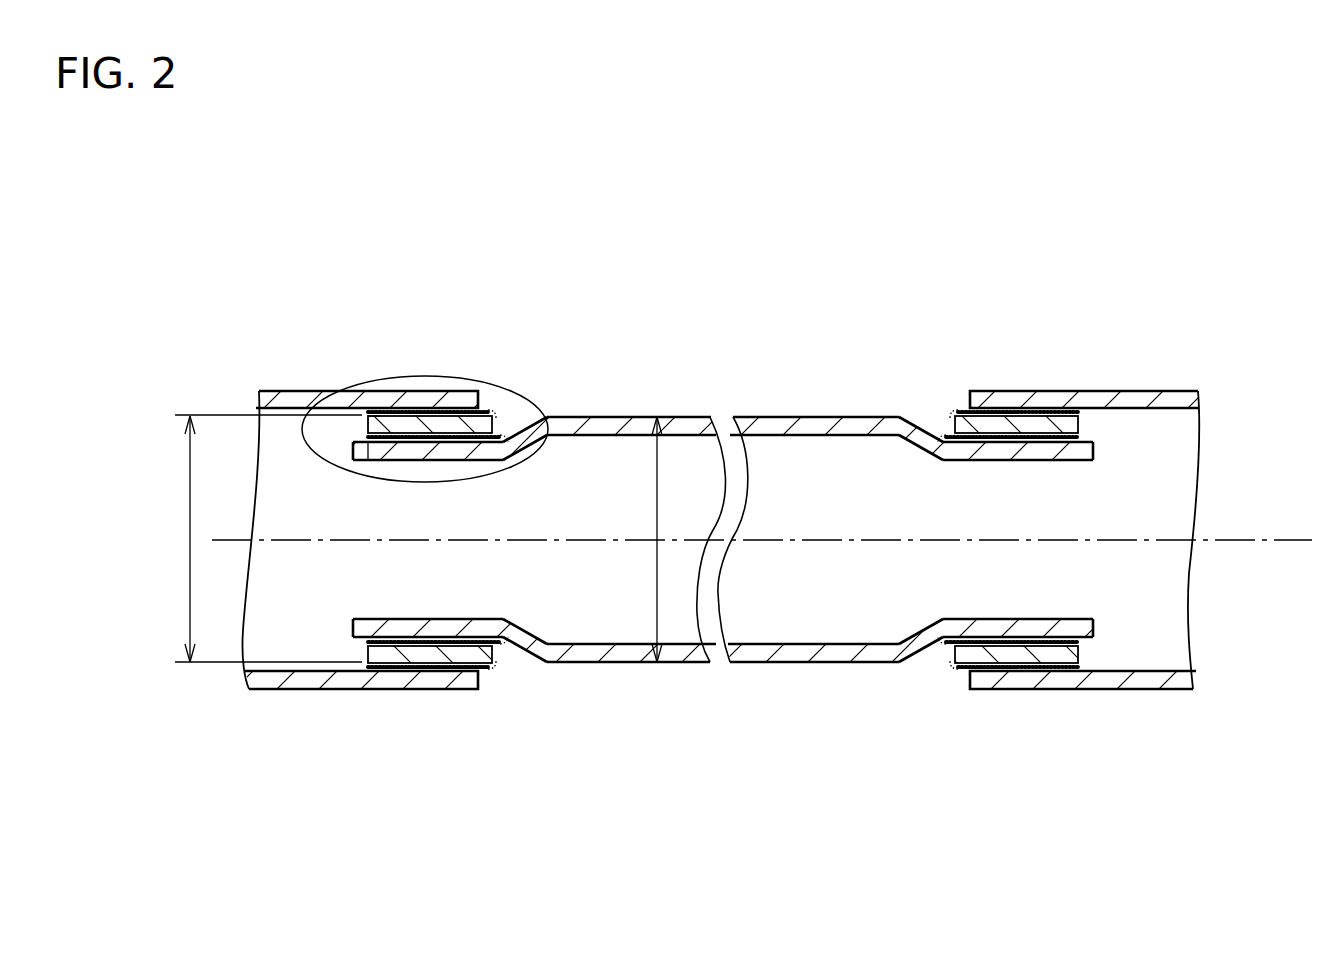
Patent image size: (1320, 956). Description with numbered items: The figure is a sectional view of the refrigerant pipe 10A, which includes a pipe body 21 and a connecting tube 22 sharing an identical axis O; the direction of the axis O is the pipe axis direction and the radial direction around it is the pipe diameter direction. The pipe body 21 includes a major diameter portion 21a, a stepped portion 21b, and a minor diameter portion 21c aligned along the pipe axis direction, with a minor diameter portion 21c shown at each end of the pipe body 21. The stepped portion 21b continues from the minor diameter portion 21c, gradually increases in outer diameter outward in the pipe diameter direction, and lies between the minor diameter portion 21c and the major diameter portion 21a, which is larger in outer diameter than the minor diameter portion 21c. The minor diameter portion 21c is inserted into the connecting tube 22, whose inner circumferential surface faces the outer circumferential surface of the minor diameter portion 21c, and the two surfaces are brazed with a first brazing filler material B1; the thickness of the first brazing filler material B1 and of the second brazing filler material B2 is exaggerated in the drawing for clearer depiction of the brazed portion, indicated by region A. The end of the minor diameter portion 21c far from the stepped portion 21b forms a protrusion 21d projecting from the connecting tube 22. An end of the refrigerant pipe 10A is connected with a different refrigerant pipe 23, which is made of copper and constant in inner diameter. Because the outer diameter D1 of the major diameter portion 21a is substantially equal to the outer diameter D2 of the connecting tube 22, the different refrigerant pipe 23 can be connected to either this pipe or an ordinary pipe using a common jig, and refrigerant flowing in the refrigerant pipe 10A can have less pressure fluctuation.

The refrigerant pipe 10A is at (856, 276).
The pipe body 21 is at (689, 417).
The major diameter portion 21a is at (613, 425).
The stepped portion 21b is at (527, 421).
The minor diameter portion 21c is at (447, 452).
The protrusion 21d is at (357, 625).
The connecting tube 22 is at (416, 427).
The different refrigerant pipe 23 is at (298, 398).
The brazed portion A is at (463, 377).
The first brazing filler material B1 is at (370, 444).
The second brazing filler material B2 is at (383, 414).
The outer diameter of the major diameter portion D1 is at (638, 539).
The outer diameter of the connecting tube D2 is at (255, 538).
The axis O is at (1296, 612).